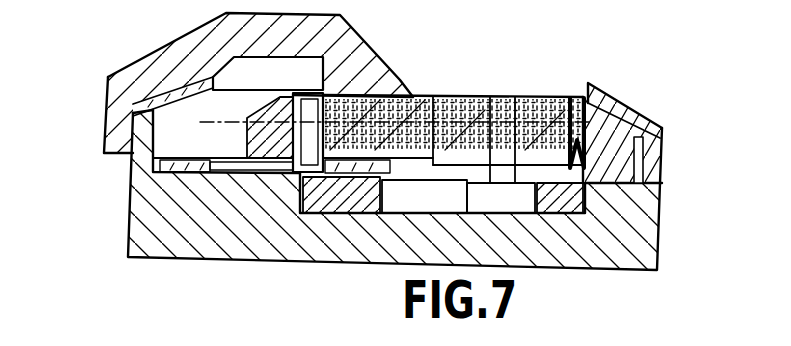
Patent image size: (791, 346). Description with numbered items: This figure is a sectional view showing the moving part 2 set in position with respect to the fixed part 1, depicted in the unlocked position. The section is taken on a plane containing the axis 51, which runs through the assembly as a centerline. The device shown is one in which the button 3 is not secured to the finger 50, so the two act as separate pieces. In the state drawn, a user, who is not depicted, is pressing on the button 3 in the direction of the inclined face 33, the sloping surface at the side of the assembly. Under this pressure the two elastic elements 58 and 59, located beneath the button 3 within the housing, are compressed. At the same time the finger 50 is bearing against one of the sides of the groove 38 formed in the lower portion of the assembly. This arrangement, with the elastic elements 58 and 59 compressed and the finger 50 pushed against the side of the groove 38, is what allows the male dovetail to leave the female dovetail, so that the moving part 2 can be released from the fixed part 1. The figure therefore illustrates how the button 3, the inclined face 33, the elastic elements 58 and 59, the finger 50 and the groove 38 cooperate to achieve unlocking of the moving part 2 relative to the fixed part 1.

The fixed part 1 is at (640, 227).
The moving part 2 is at (620, 157).
The button 3 is at (149, 54).
The inclined face 33 is at (618, 107).
The groove 38 is at (404, 205).
The finger 50 is at (513, 205).
The axis 51 is at (198, 123).
The elastic element 58 is at (580, 94).
The elastic element 59 is at (387, 97).